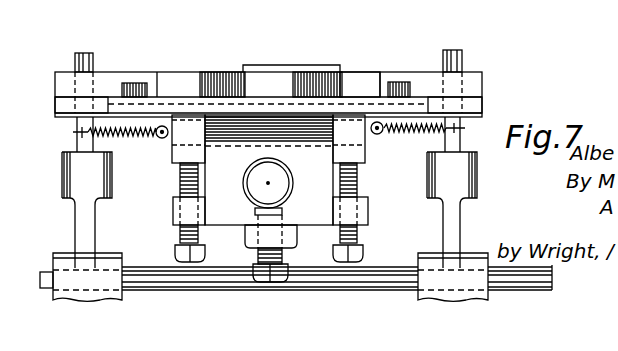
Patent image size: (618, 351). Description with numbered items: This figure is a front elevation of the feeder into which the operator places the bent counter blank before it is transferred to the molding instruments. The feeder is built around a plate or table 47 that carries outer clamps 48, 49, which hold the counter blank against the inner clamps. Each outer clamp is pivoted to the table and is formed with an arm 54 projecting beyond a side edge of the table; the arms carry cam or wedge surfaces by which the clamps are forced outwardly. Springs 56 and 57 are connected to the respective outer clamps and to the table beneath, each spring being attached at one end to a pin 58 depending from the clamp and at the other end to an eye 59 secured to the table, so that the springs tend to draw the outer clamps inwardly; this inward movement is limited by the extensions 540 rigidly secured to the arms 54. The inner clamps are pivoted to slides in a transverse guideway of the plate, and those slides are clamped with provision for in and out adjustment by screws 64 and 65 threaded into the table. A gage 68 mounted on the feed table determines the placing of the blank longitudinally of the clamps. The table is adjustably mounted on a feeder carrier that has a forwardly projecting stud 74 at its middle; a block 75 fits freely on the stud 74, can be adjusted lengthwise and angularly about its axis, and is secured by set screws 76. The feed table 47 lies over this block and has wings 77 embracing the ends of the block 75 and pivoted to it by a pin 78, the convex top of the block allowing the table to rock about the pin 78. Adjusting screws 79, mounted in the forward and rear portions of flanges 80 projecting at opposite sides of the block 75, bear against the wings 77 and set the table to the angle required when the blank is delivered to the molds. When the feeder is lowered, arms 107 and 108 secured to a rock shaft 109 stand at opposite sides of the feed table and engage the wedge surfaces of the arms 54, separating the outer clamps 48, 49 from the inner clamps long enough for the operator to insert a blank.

The plate or table 47 is at (278, 100).
The outer clamp 48 is at (173, 80).
The outer clamp 49 is at (363, 80).
The arm 54 is at (65, 85).
The spring 56 is at (132, 140).
The spring 57 is at (403, 132).
The pin 58 is at (73, 137).
The eye 59 is at (162, 138).
The screw 64 is at (140, 83).
The screw 65 is at (401, 82).
The gage 68 is at (260, 75).
The stud 74 is at (271, 182).
The block 75 is at (230, 170).
The set screw 76 is at (280, 258).
The wing 77 is at (183, 152).
The pin 78 is at (363, 250).
The adjusting screw 79 is at (180, 252).
The flange 80 is at (173, 217).
The arm 107 is at (85, 58).
The arm 108 is at (460, 53).
The rock shaft 109 is at (330, 275).
The extension 540 is at (143, 117).